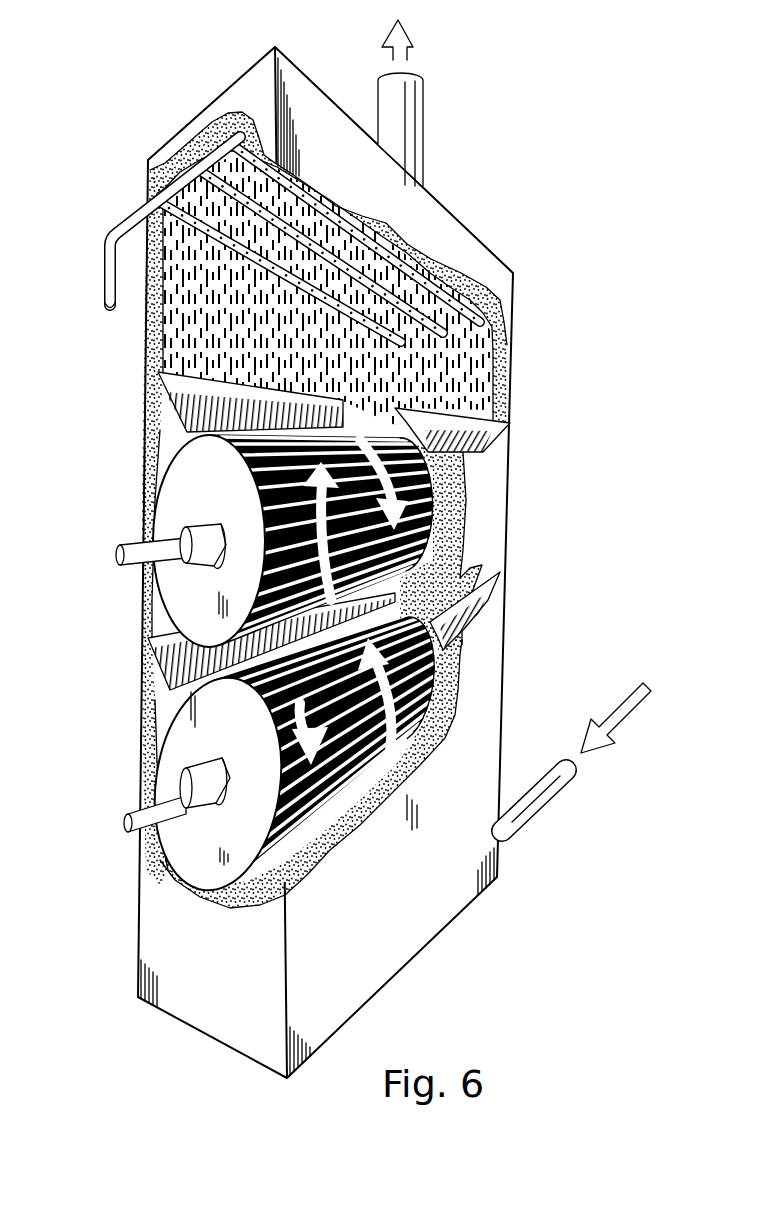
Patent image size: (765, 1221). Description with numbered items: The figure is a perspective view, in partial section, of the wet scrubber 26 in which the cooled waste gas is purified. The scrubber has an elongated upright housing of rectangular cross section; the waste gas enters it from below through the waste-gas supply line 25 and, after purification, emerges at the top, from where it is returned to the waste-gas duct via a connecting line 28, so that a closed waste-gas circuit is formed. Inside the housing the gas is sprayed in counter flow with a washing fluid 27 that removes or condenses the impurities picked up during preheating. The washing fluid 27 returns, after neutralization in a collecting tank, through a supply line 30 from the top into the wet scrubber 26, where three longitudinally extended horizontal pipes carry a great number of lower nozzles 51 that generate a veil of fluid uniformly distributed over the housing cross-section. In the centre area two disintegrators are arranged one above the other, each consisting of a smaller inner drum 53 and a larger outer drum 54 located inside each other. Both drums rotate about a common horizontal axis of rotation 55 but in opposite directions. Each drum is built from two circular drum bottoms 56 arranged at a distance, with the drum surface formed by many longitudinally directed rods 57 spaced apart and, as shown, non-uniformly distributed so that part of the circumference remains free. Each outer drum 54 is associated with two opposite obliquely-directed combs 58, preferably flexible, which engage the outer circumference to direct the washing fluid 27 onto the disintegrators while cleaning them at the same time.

The waste-gas supply line 25 is at (548, 795).
The wet scrubber 26 is at (568, 558).
The washing fluid 27 is at (192, 317).
The connecting line 28 is at (402, 127).
The supply line 30 is at (123, 223).
The lower nozzles 51 is at (448, 312).
The inner drum 53 is at (352, 740).
The outer drum 54 is at (208, 860).
The axis of rotation 55 is at (127, 555).
The drum bottoms 56 is at (198, 482).
The rods 57 is at (380, 710).
The combs 58 is at (188, 378).